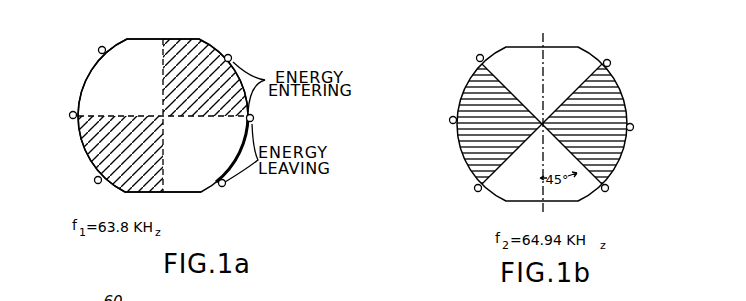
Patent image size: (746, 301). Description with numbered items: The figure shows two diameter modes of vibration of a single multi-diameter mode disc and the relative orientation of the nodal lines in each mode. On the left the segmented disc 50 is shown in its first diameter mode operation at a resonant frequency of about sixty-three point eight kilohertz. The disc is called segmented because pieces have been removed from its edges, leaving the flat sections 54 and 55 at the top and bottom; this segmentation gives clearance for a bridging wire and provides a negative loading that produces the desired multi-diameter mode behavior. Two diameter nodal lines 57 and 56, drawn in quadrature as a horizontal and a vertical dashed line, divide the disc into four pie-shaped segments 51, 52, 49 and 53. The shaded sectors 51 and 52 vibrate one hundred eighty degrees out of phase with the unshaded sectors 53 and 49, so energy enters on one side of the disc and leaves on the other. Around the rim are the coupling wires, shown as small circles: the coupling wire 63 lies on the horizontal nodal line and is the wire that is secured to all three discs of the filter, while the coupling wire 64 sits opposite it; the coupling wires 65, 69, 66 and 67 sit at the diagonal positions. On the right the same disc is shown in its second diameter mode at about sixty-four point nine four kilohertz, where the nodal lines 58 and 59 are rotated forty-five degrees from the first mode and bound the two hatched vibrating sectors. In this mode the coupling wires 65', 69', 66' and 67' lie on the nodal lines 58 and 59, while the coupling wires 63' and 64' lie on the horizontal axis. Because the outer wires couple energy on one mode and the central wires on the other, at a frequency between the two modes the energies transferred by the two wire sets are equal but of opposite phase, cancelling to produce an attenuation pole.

In FIG. 1a, the segmented disc 50 is at (210, 30).
In FIG. 1a, the pie-shaped segment 49 is at (230, 168).
In FIG. 1a, the pie-shaped segment 51 is at (215, 50).
In FIG. 1a, the pie-shaped segment 52 is at (88, 158).
In FIG. 1a, the pie-shaped segment 53 is at (98, 63).
In FIG. 1a, the flat section 54 is at (144, 39).
In FIG. 1a, the flat section 55 is at (183, 194).
In FIG. 1a, the diameter nodal line 56 is at (164, 160).
In FIG. 1a, the diameter nodal line 57 is at (117, 115).
In FIG. 1a, the coupling wire 63 is at (269, 124).
In FIG. 1a, the coupling wire 64 is at (51, 118).
In FIG. 1a, the coupling wire 65 is at (249, 53).
In FIG. 1a, the coupling wire 66 is at (240, 191).
In FIG. 1a, the coupling wire 67 is at (89, 38).
In FIG. 1a, the coupling wire 69 is at (78, 189).
In FIG. 1b, the nodal line 58 is at (583, 88).
In FIG. 1b, the nodal line 59 is at (500, 84).
In FIG. 1b, the electrode terminal 63' is at (649, 118).
In FIG. 1b, the electrode terminal 64' is at (432, 127).
In FIG. 1b, the electrode terminal 65' is at (626, 56).
In FIG. 1b, the electrode terminal 66' is at (624, 193).
In FIG. 1b, the electrode terminal 67' is at (464, 53).
In FIG. 1b, the electrode terminal 69' is at (455, 177).